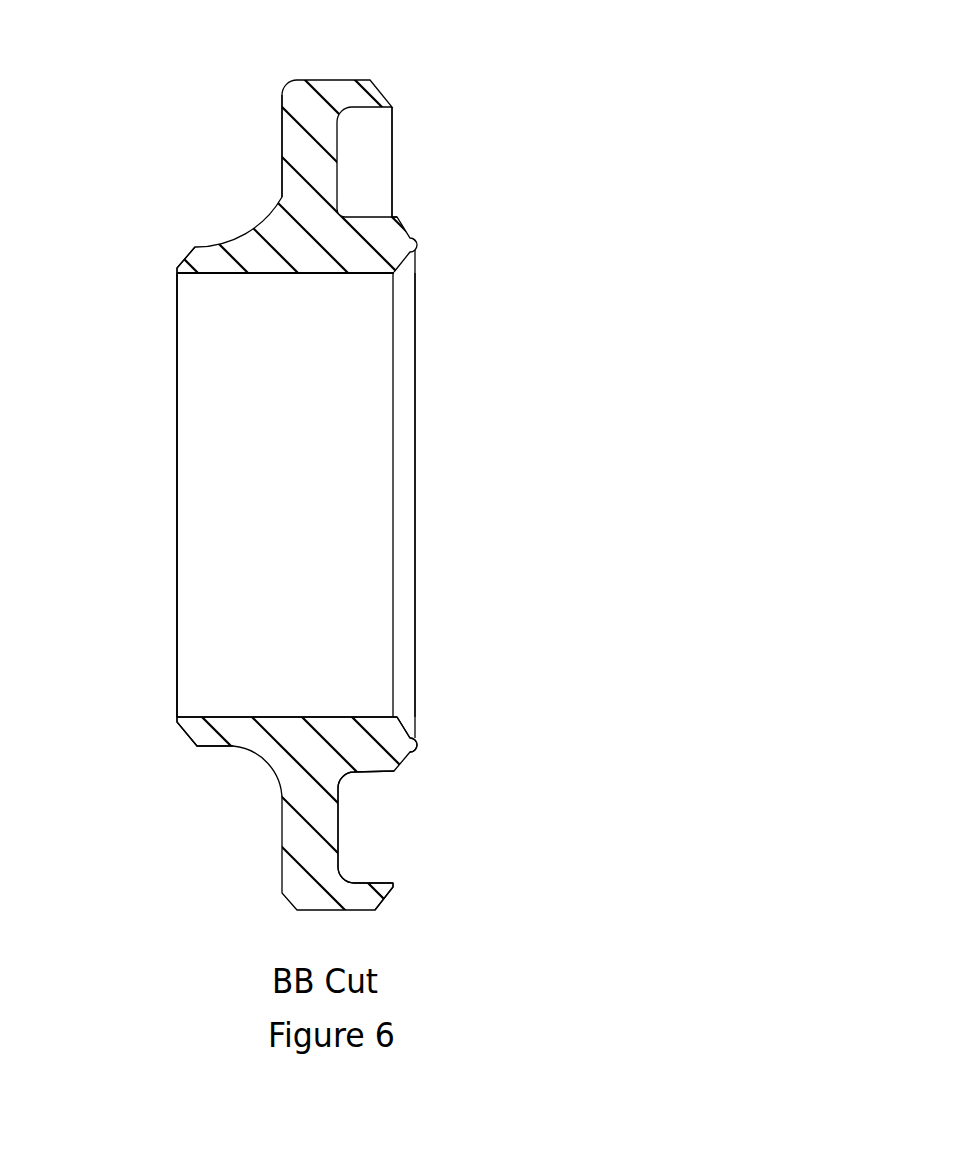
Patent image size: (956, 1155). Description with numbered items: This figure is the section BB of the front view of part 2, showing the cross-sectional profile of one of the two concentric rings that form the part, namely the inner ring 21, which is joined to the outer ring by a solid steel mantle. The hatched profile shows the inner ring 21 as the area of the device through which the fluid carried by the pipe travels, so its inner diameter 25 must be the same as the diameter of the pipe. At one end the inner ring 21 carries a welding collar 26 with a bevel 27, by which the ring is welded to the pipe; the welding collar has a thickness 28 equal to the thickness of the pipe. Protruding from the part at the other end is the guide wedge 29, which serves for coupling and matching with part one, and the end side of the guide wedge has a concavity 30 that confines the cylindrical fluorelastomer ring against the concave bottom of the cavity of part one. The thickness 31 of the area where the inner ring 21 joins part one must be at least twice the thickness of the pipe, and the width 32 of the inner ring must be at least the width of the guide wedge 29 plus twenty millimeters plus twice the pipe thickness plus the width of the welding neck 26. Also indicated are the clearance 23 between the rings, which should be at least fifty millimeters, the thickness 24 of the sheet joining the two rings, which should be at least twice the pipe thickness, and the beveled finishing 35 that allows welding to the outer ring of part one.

The part 2 is at (590, 195).
The inner ring 21 is at (255, 705).
The clearance between the rings 23 is at (373, 785).
The thickness of the sheet 24 is at (188, 160).
The inner diameter 25 is at (328, 285).
The welding collar 26 is at (282, 285).
The bevel 27 is at (166, 250).
The thickness of the welding collar 28 is at (200, 705).
The guide wedge 29 is at (410, 721).
The concavity 30 is at (430, 744).
The thickness of the joint area 31 is at (380, 172).
The width of the inner ring 32 is at (187, 368).
The beveled finishing 35 is at (398, 901).